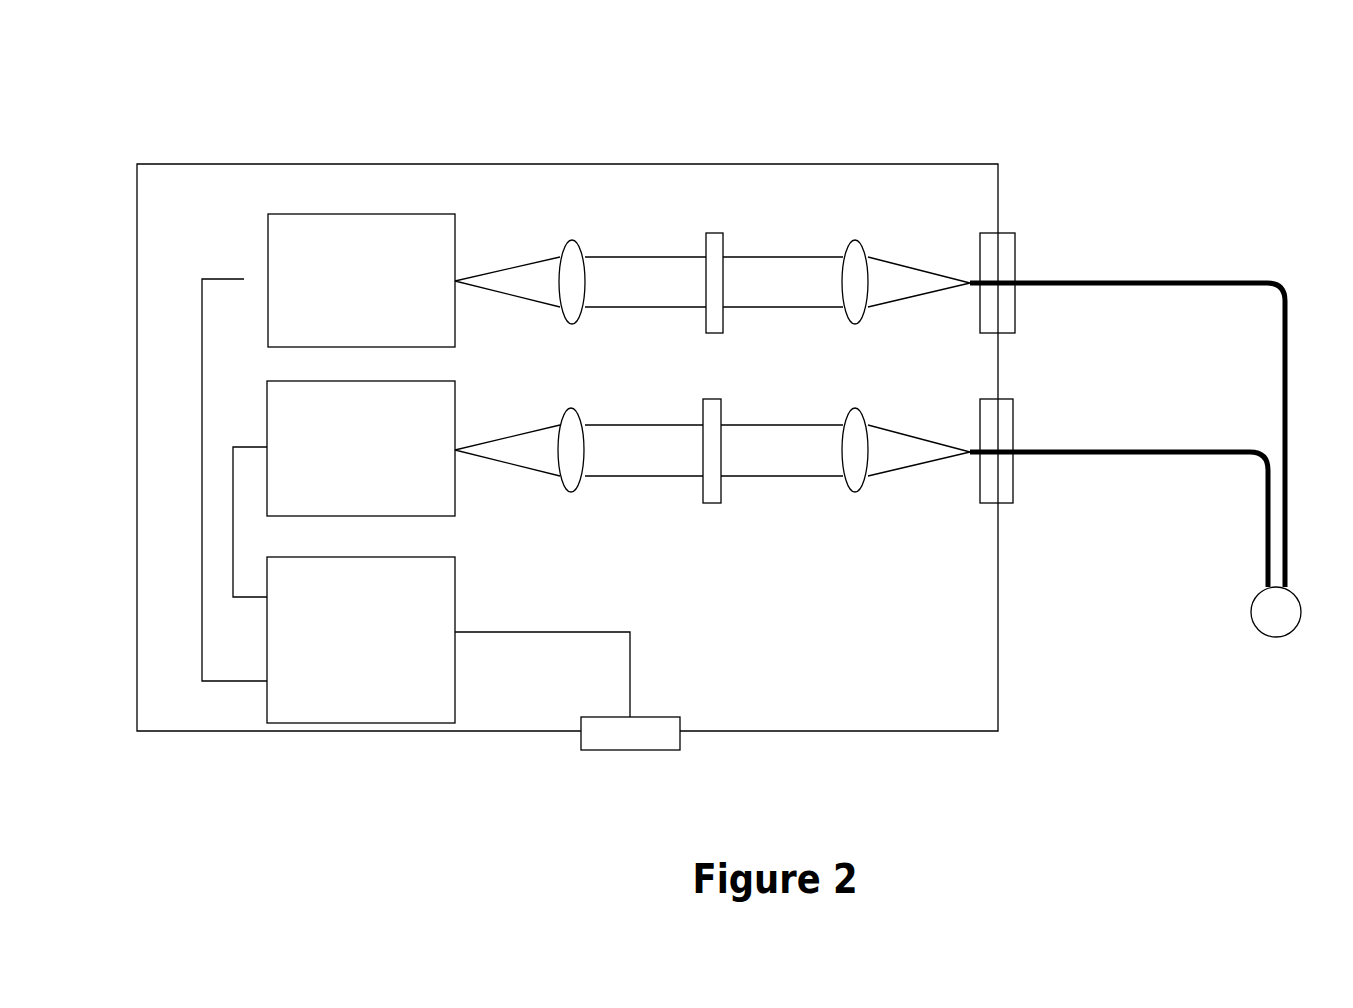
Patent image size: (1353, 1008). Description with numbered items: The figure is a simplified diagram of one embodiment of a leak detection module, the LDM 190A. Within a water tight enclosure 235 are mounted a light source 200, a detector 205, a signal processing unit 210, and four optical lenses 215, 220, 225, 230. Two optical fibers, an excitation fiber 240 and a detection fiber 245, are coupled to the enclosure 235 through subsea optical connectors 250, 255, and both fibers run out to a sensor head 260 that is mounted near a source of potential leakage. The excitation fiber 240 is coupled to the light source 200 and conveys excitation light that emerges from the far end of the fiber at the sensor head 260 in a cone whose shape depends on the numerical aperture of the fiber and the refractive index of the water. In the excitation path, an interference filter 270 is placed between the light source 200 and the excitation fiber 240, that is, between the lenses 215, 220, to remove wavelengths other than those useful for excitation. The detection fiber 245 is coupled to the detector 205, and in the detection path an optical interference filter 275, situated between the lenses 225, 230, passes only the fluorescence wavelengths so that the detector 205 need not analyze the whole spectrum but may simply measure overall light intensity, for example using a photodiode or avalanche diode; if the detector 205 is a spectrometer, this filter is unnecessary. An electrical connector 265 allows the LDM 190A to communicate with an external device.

The LDM 190A is at (97, 128).
The water tight enclosure 235 is at (498, 163).
The light source 200 is at (361, 280).
The detector 205 is at (361, 448).
The signal processing unit 210 is at (361, 640).
The optical lens 215 is at (572, 239).
The interference filter 270 is at (712, 232).
The optical lens 220 is at (857, 239).
The subsea optical connector 250 is at (1005, 232).
The optical lens 225 is at (572, 407).
The optical interference filter 275 is at (712, 398).
The optical lens 230 is at (857, 407).
The subsea optical connector 255 is at (1004, 397).
The excitation fiber 240 is at (1122, 279).
The detection fiber 245 is at (1122, 449).
The sensor head 260 is at (1273, 636).
The electrical connector 265 is at (663, 715).